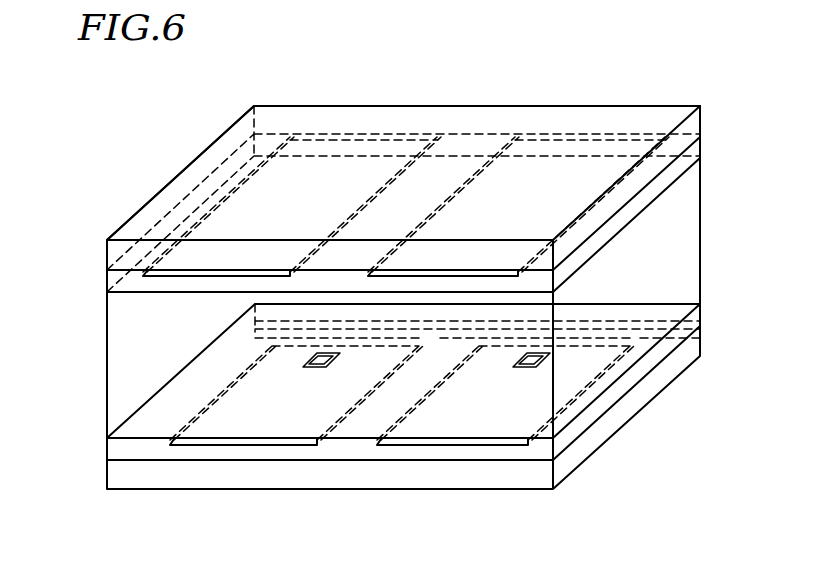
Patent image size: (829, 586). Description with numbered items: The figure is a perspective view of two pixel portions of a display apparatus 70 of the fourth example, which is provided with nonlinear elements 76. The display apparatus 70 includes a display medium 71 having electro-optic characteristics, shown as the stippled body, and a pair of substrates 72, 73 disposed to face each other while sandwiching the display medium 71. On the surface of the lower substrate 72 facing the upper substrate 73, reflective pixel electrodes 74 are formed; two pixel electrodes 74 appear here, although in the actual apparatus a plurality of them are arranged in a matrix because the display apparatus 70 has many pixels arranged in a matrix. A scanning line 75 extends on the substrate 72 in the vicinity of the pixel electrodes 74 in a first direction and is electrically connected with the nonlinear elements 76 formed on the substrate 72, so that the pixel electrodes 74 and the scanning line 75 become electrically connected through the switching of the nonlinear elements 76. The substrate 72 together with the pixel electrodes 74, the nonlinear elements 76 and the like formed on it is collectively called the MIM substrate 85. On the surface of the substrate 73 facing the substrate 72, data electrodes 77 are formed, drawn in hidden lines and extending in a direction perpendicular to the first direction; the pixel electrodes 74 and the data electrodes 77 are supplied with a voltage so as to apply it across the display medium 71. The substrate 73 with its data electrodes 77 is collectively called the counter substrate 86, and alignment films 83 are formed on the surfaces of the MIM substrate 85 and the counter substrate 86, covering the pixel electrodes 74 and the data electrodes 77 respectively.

The display apparatus 70 is at (594, 57).
The display medium 71 is at (122, 353).
The substrate 72 is at (457, 483).
The substrate 73 is at (472, 118).
The pixel electrodes 74 is at (242, 446).
The scanning line 75 is at (682, 342).
The nonlinear elements 76 is at (560, 368).
The data electrodes 77 is at (317, 172).
The alignment films 83 is at (700, 147).
The MIM substrate 85 is at (717, 328).
The counter substrate 86 is at (717, 107).